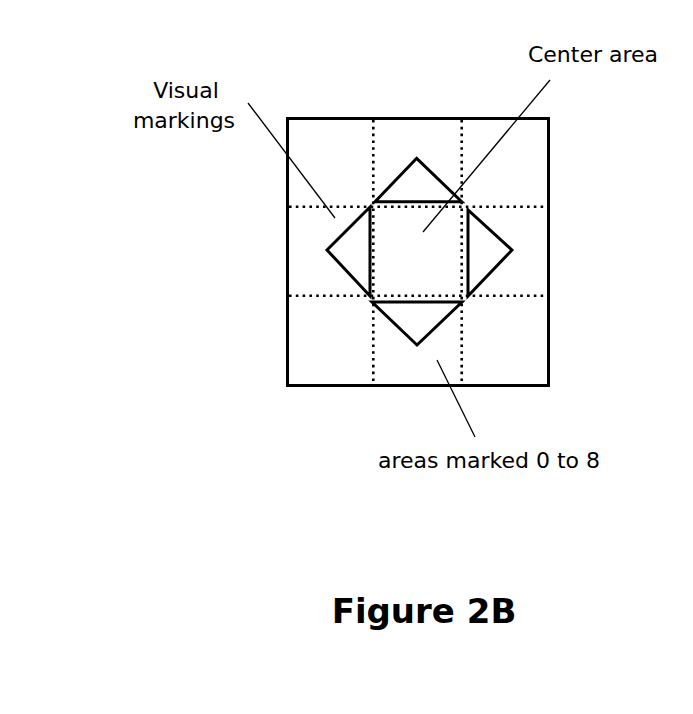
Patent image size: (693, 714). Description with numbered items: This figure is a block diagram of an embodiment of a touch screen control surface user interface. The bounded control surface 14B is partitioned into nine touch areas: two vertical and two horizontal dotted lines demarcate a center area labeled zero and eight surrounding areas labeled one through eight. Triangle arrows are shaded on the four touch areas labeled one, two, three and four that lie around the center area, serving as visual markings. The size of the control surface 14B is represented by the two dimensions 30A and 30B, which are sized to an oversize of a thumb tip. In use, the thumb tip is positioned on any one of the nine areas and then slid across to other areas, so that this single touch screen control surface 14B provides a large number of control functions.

The bounded control surface 14B is at (286, 308).
The control surface width dimension 30A is at (300, 92).
The control surface height dimension 30B is at (563, 364).